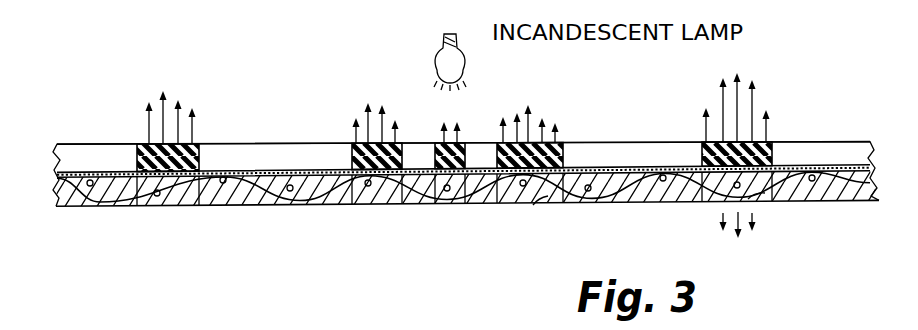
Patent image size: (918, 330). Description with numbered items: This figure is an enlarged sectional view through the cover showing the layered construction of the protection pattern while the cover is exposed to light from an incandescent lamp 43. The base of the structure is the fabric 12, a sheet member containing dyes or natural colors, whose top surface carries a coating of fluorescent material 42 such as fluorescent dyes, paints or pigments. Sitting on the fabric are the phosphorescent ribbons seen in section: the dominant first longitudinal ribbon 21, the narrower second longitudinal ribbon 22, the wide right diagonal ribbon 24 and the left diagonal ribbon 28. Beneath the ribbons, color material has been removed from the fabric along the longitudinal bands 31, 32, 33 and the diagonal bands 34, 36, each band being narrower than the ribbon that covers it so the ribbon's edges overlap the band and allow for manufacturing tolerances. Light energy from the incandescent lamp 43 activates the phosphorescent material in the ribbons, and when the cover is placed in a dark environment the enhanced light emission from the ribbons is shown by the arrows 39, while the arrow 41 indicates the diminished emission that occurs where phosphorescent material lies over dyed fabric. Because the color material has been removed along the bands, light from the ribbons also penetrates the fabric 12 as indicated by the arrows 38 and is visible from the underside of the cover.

The fabric 12 is at (658, 195).
The first longitudinal ribbon 21 is at (165, 150).
The second longitudinal ribbon 22 is at (460, 145).
The first wide right diagonal ribbon 24 is at (527, 145).
The left diagonal ribbon 28 is at (372, 147).
The longitudinal band 31 is at (165, 204).
The longitudinal band 32 is at (755, 197).
The longitudinal band 33 is at (463, 205).
The diagonal band 34 is at (383, 188).
The diagonal band 36 is at (537, 207).
The arrow 38 is at (740, 240).
The arrow 39 is at (194, 121).
The arrow 41 is at (702, 130).
The fluorescent material 42 is at (57, 146).
The incandescent lamp 43 is at (446, 62).